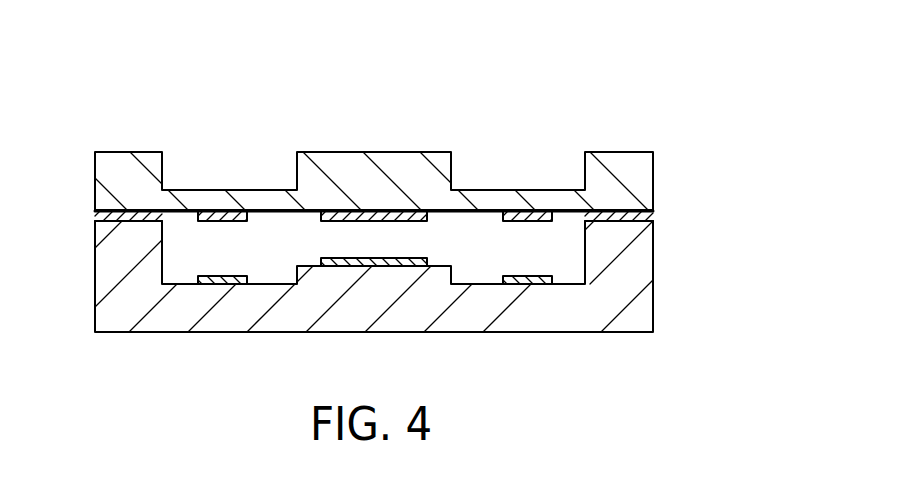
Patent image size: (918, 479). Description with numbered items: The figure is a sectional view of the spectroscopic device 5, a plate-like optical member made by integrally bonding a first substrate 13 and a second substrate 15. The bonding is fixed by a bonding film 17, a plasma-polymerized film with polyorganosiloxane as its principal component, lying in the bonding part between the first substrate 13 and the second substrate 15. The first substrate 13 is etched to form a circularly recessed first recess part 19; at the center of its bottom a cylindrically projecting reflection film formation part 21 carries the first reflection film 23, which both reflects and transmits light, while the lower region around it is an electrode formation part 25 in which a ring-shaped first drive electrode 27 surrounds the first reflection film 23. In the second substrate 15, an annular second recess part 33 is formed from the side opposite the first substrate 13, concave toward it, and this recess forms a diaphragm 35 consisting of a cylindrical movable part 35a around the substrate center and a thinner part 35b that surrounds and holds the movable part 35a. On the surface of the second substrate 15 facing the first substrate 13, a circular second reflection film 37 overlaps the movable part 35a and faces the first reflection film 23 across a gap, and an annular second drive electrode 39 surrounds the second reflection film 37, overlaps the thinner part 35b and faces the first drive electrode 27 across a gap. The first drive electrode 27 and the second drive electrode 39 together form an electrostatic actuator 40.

The spectroscopic device 5 is at (681, 104).
The first substrate 13 is at (652, 263).
The second substrate 15 is at (652, 168).
The bonding film 17 is at (653, 213).
The first recess part 19 is at (585, 265).
The reflection film formation part 21 is at (310, 266).
The first reflection film 23 is at (383, 258).
The electrode formation part 25 is at (485, 283).
The first drive electrode 27 is at (208, 276).
The second recess part 33 is at (585, 172).
The diaphragm 35 is at (395, 92).
The movable part 35a is at (397, 152).
The thinner part 35b is at (500, 190).
The second reflection film 37 is at (363, 220).
The second drive electrode 39 is at (237, 223).
The electrostatic actuator 40 is at (170, 128).